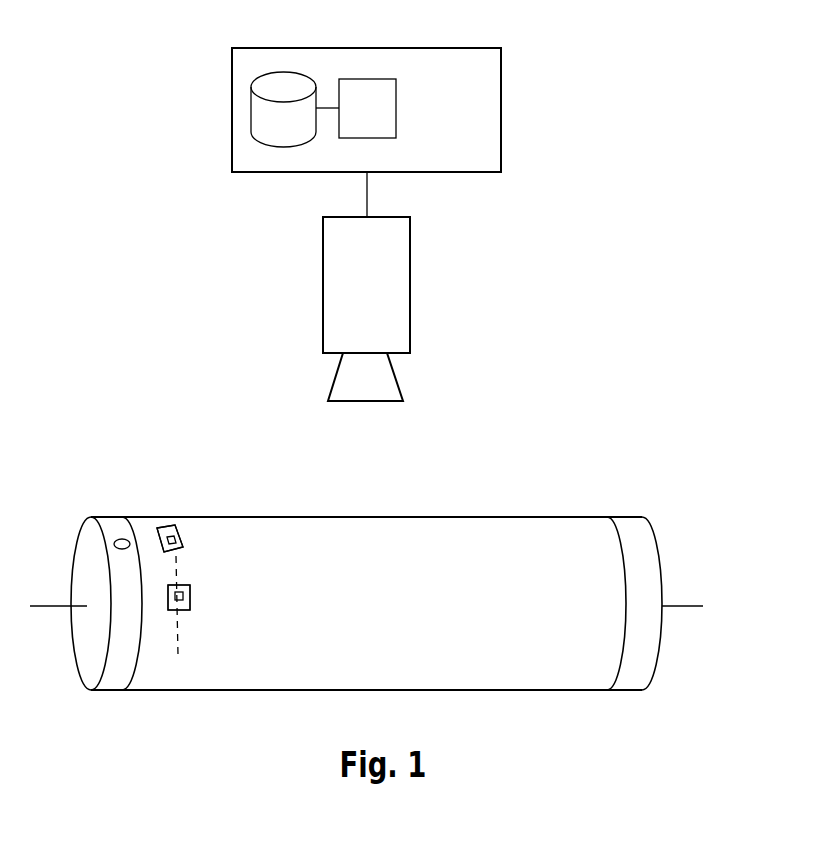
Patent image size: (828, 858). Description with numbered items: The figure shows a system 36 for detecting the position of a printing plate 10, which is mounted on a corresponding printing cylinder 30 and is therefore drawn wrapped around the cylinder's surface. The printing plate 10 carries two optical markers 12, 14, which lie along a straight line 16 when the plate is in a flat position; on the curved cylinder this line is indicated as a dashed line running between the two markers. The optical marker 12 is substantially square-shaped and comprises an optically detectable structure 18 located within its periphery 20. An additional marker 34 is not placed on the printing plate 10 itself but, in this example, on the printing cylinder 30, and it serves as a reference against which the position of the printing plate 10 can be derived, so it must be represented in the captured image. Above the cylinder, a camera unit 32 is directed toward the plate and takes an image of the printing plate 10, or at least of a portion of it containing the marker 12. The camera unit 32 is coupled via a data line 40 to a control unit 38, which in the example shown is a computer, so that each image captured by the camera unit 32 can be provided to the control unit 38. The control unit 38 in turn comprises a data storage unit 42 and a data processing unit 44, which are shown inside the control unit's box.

The printing plate 10 is at (575, 538).
The optical marker 12 is at (190, 525).
The optical marker 14 is at (200, 612).
The straight line 16 is at (177, 635).
The optically detectable structure 18 is at (157, 520).
The periphery 20 is at (183, 547).
The printing cylinder 30 is at (643, 562).
The camera unit 32 is at (392, 307).
The additional marker 34 is at (120, 538).
The system 36 is at (552, 46).
The control unit 38 is at (485, 133).
The data line 40 is at (367, 196).
The data storage unit 42 is at (263, 112).
The data processing unit 44 is at (371, 98).